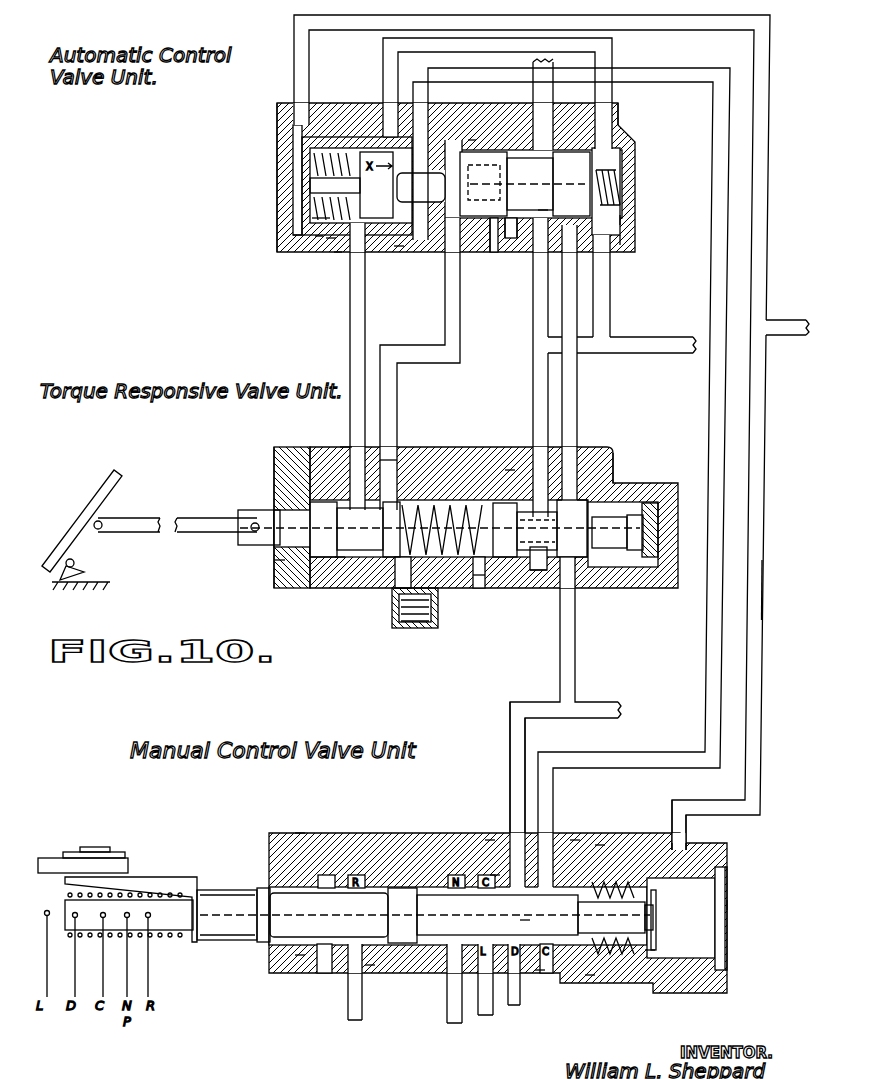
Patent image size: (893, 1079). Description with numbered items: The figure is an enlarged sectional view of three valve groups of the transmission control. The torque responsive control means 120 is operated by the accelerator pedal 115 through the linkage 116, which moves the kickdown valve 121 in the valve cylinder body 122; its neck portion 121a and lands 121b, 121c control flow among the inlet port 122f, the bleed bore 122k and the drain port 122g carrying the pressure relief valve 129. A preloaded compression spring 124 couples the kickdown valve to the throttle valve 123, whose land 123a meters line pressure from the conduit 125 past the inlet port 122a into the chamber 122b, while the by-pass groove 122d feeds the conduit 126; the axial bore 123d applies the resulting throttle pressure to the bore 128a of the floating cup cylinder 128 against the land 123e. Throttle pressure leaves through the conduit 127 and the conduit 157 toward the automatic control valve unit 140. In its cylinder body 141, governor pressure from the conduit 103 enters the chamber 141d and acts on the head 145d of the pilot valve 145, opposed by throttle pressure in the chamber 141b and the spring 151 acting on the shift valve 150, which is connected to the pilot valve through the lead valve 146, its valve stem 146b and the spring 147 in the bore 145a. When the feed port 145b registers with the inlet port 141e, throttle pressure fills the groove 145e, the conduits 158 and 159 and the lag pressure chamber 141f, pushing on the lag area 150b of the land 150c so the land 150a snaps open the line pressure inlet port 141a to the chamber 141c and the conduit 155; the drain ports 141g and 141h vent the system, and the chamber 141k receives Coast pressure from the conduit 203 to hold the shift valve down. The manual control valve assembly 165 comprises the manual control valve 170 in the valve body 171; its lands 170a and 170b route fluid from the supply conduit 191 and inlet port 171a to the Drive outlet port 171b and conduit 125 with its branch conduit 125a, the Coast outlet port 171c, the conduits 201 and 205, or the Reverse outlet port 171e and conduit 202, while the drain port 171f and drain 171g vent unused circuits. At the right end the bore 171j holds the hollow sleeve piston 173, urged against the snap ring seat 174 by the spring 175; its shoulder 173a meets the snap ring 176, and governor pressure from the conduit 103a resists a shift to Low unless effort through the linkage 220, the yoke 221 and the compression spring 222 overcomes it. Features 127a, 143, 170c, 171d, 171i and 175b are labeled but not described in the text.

The conduit 103 is at (769, 180).
The conduit 103a is at (763, 590).
The accelerator pedal 115 is at (95, 495).
The linkage 116 is at (155, 533).
The torque responsive control means 120 is at (265, 452).
The kickdown valve 121 is at (243, 552).
The neck portion 121a is at (355, 529).
The valve land 121b is at (340, 562).
The valve land 121c is at (275, 560).
The valve cylinder body 122 is at (475, 447).
The line pressure inlet port 122a is at (540, 575).
The chamber 122b is at (480, 575).
The cylinder by-pass groove 122d is at (613, 462).
The inlet port 122f is at (345, 447).
The drain port 122g is at (395, 590).
The bleed bore 122k is at (386, 460).
The throttle valve 123 is at (465, 503).
The land 123a is at (575, 600).
The bore 123d is at (507, 462).
The throttle valve land 123e is at (625, 575).
The preloaded compression spring 124 is at (440, 500).
The conduit 125 is at (510, 770).
The branch conduit 125a is at (608, 702).
The conduit 126 is at (578, 385).
The conduit 127 is at (533, 380).
The branch pipe 127a is at (638, 337).
The floating cup cylinder 128 is at (660, 588).
The bore 128a is at (635, 503).
The pressure relief valve 129 is at (410, 628).
The automatic control valve unit 140 is at (270, 130).
The cylinder body 141 is at (525, 120).
The line pressure inlet port 141a is at (620, 240).
The chamber 141b is at (620, 220).
The chamber 141c is at (540, 210).
The chamber 141d is at (302, 147).
The throttle pressure inlet port 141e is at (386, 136).
The lag pressure chamber 141f is at (470, 140).
The drain port 141g is at (330, 242).
The drain port 141h is at (505, 252).
The chamber 141k is at (440, 140).
The bore 143 is at (398, 250).
The pilot valve 145 is at (294, 186).
The bore 145a is at (300, 238).
The throttle pressure feed port 145b is at (360, 140).
The head 145d is at (318, 222).
The annular groove 145e is at (338, 255).
The lead valve 146 is at (376, 250).
The valve stem 146b is at (305, 205).
The preloaded compression spring 147 is at (318, 240).
The shift valve 150 is at (495, 150).
The valve land 150a is at (620, 130).
The lag area 150b is at (505, 252).
The land 150c is at (490, 252).
The spring 151 is at (608, 160).
The conduit 155 is at (553, 92).
The conduit 157 is at (383, 55).
The conduit 158 is at (350, 328).
The conduit 159 is at (445, 296).
The manually operated control valve assembly 165 is at (300, 833).
The manual control valve 170 is at (240, 882).
The land 170a is at (339, 893).
The valve land 170b is at (540, 970).
The valve stem end 170c is at (588, 918).
The valve body 171 is at (355, 833).
The inlet port 171a is at (490, 913).
The outlet port 171b is at (490, 840).
The outlet port 171c is at (525, 920).
The housing port 171d is at (495, 875).
The outlet port 171e is at (370, 965).
The drain port 171f is at (300, 955).
The drain 171g is at (590, 975).
The housing port 171i is at (575, 840).
The bore 171j is at (727, 905).
The hollow sleeve piston 173 is at (690, 985).
The shoulder 173a is at (650, 950).
The snap ring seat 174 is at (727, 870).
The preloaded compression spring 175 is at (600, 845).
The pipe connection 175b is at (690, 840).
The snap ring 176 is at (656, 900).
The supply conduit 191 is at (450, 1000).
The conduit 201 is at (490, 1015).
The Reverse drive supply conduit 202 is at (348, 995).
The Coast drive supply conduit 203 is at (553, 805).
The conduit 205 is at (520, 1005).
The control lever linkage 220 is at (50, 858).
The yoke 221 is at (170, 877).
The compression spring 222 is at (165, 940).